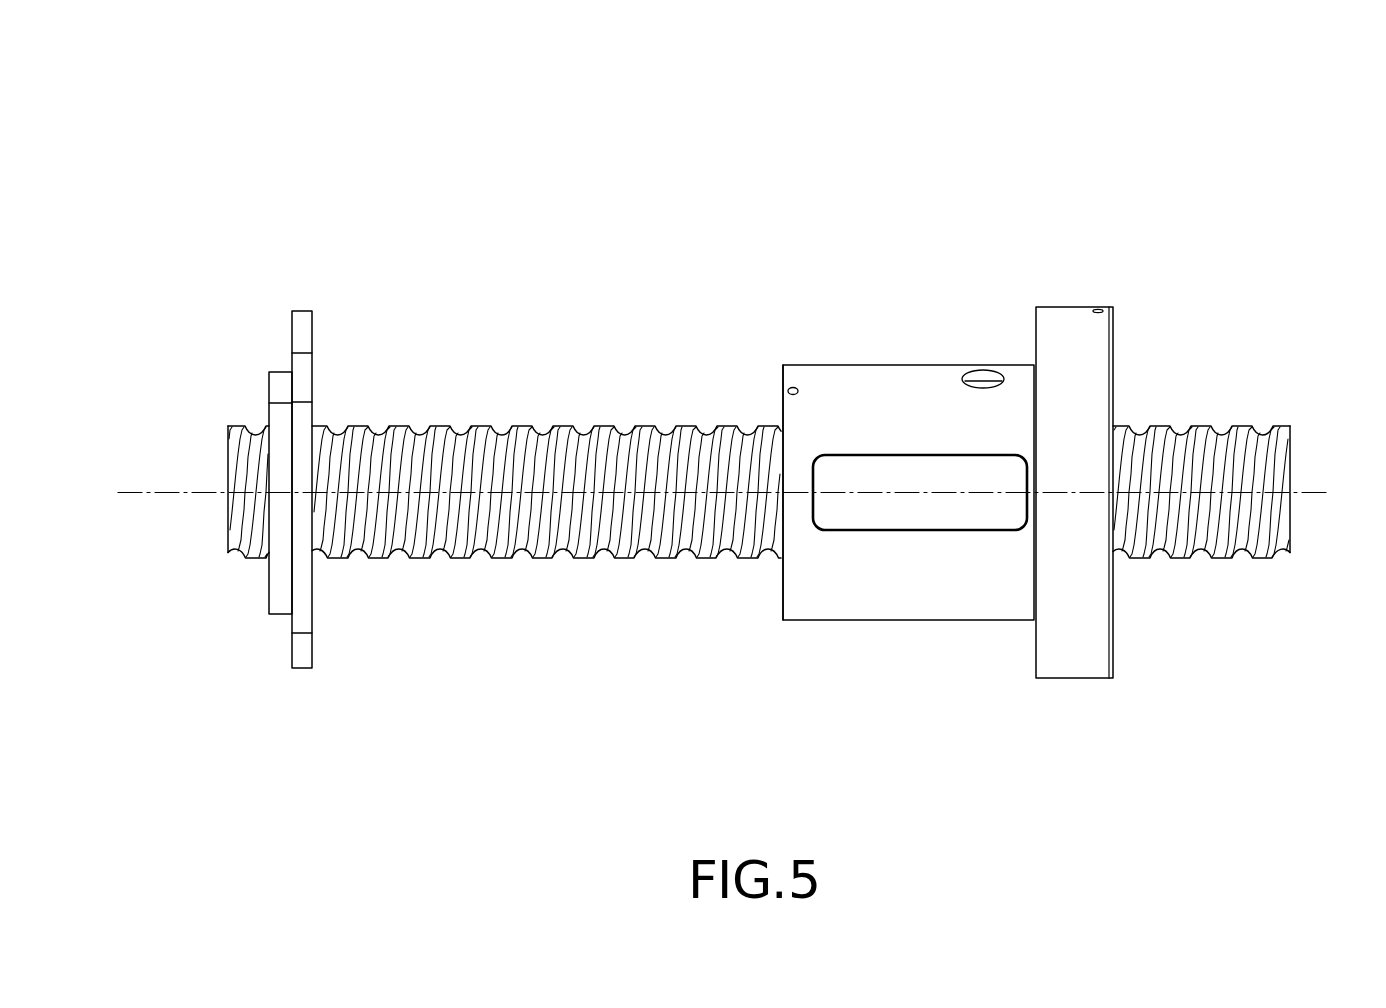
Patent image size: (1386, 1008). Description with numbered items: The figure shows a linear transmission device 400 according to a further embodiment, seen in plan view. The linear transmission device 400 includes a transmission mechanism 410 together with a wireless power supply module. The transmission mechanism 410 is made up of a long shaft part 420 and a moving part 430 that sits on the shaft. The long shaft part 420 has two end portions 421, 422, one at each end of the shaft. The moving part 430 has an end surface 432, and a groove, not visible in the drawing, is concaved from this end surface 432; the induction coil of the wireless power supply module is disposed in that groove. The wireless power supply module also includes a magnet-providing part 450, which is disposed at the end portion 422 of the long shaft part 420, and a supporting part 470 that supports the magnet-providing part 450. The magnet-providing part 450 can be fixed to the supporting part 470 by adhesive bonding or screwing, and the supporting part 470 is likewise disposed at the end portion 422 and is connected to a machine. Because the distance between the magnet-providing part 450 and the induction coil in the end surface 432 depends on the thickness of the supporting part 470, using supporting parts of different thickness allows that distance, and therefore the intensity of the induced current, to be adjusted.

The linear transmission device 400 is at (158, 51).
The transmission mechanism 410 is at (855, 243).
The long shaft part 420 is at (567, 428).
The end portion 421 is at (1282, 557).
The end portion 422 is at (334, 562).
The moving part 430 is at (842, 365).
The end surface 432 is at (780, 392).
The magnet-providing part 450 is at (302, 325).
The supporting part 470 is at (282, 593).